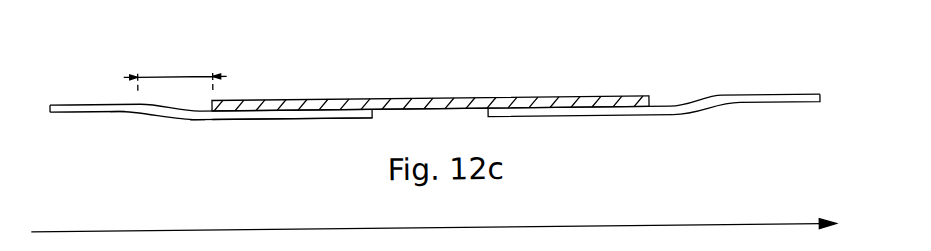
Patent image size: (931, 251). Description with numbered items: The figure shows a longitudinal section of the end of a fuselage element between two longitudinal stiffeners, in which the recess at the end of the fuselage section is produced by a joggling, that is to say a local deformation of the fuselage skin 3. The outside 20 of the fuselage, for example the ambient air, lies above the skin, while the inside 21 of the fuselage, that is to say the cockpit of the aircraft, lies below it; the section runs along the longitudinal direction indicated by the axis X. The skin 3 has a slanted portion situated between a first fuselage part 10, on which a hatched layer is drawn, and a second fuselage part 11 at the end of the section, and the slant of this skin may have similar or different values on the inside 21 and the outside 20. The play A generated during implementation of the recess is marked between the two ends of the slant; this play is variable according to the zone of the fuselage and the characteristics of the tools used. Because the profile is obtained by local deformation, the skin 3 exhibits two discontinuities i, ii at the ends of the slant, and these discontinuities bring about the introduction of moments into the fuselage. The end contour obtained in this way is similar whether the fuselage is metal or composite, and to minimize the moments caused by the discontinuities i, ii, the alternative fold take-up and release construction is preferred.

The fuselage skin 3 is at (89, 101).
The first fuselage part 10 is at (260, 100).
The second fuselage part 11 is at (63, 103).
The outside of the fuselage 20 is at (630, 67).
The inside of the fuselage 21 is at (625, 164).
The play A is at (174, 70).
The discontinuity i is at (117, 111).
The discontinuity ii is at (198, 121).
The longitudinal axis X is at (798, 229).